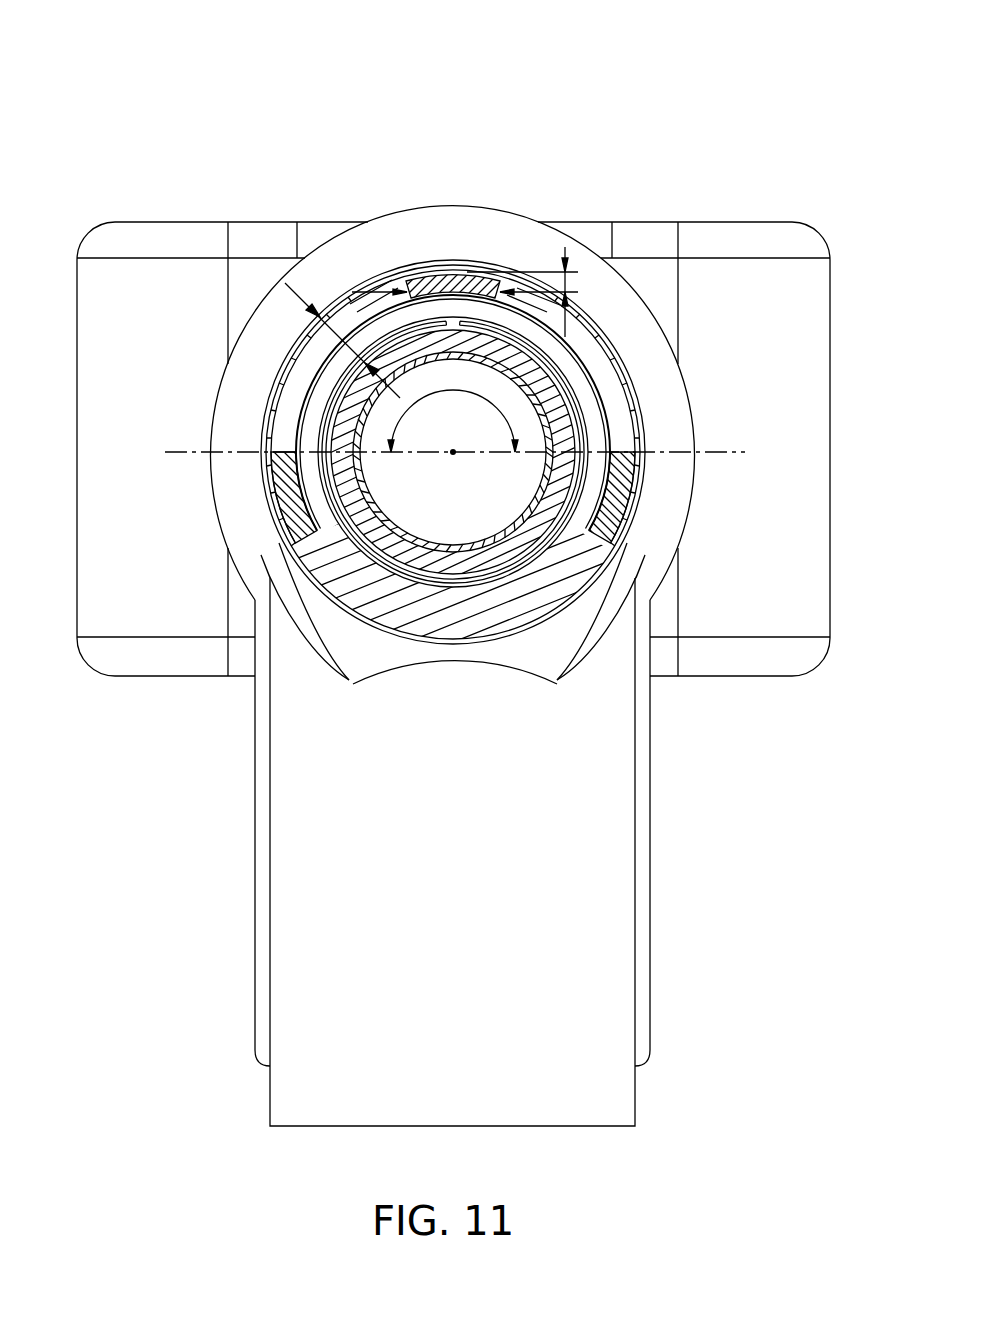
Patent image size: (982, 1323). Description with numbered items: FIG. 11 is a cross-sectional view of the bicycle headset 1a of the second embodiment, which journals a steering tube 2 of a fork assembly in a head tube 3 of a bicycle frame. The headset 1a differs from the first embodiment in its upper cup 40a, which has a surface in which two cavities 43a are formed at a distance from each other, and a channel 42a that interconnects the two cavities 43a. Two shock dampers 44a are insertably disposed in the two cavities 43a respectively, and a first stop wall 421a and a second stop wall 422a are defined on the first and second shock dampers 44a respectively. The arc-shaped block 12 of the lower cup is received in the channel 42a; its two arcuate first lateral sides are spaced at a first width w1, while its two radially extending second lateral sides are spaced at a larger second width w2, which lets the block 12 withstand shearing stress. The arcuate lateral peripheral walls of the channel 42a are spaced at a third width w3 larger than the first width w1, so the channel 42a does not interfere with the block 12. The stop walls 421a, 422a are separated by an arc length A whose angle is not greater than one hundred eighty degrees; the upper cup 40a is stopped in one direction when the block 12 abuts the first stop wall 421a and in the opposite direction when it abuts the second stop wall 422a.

The bicycle headset 1a is at (340, 120).
The steering tube 2 is at (300, 560).
The head tube 3 is at (514, 248).
The block 12 is at (417, 283).
The upper cup 40a is at (575, 560).
The channel 42a is at (305, 362).
The first stop wall 421a is at (607, 440).
The second stop wall 422a is at (293, 443).
The cavities 43a is at (273, 507).
The shock dampers 44a is at (265, 480).
The first width w1 is at (567, 250).
The second width w2 is at (452, 283).
The third width w3 is at (358, 330).
The arc length A is at (453, 404).